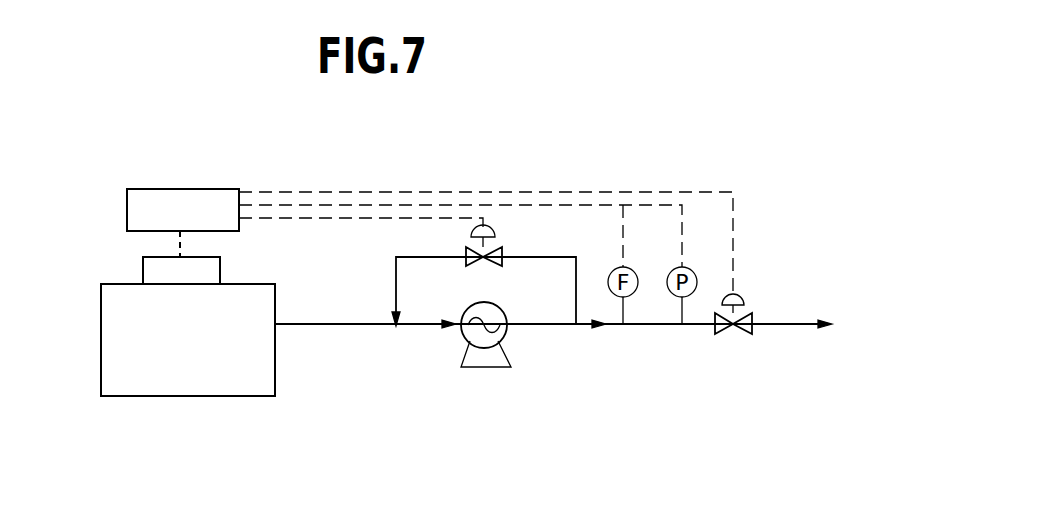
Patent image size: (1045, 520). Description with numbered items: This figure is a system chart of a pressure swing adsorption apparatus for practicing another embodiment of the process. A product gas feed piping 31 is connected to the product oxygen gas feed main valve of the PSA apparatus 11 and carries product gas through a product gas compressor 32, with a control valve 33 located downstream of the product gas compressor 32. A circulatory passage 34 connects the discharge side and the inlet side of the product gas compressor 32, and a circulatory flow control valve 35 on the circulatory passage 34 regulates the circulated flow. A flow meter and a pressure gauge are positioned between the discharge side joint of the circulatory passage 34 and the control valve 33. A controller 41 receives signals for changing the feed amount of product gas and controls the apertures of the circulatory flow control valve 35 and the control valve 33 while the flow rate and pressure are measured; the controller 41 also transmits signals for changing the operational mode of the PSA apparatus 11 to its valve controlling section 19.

The PSA apparatus 11 is at (193, 400).
The valve controlling section 19 is at (148, 273).
The controller 41 is at (223, 202).
The product gas feed piping 31 is at (348, 324).
The product gas compressor 32 is at (483, 358).
The control valve 33 is at (725, 333).
The circulatory passage 34 is at (435, 257).
The circulatory flow control valve 35 is at (500, 257).